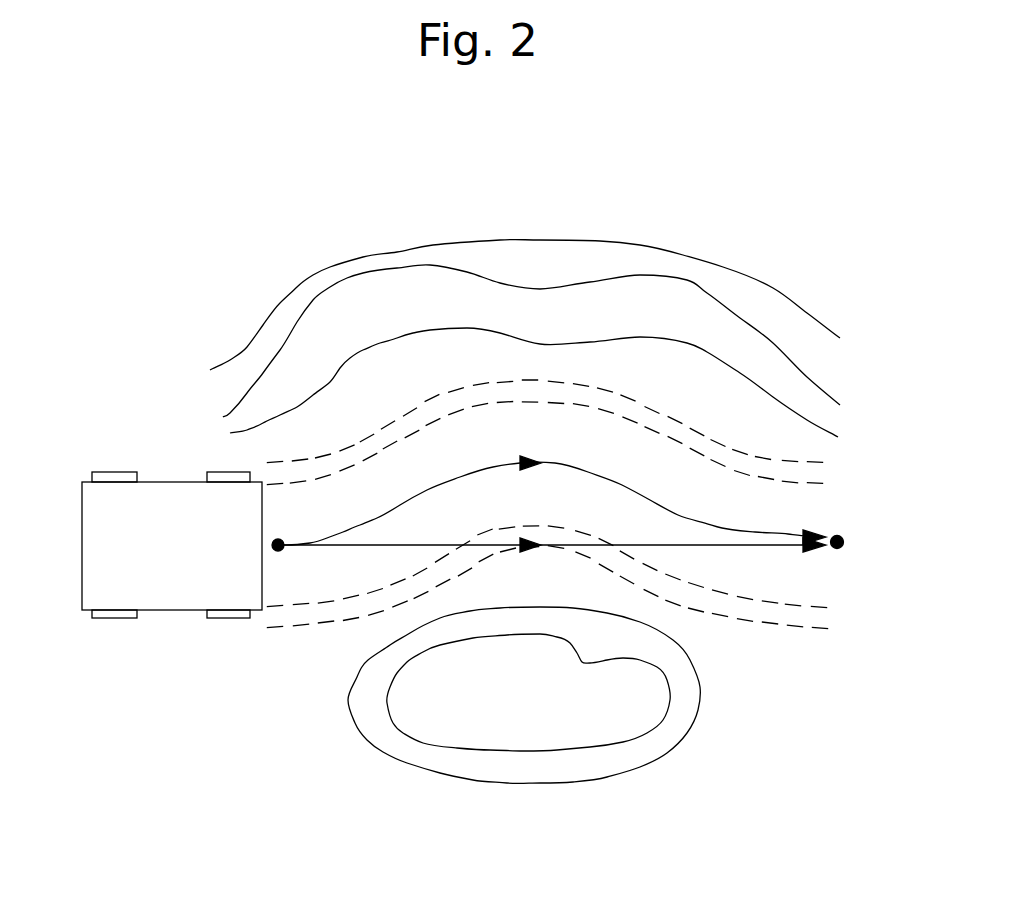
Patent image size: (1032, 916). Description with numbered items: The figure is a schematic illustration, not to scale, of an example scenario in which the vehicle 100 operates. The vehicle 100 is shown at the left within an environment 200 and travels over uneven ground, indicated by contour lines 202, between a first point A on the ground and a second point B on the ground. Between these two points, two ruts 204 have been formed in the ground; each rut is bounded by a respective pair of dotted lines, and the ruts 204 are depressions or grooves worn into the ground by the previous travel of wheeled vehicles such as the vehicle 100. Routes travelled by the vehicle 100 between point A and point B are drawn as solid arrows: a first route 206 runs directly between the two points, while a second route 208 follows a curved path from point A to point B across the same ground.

The vehicle 100 is at (95, 543).
The environment 200 is at (637, 202).
The contour lines 202 is at (688, 345).
The ruts 204 is at (757, 467).
The first route 206 is at (782, 548).
The second route 208 is at (765, 533).